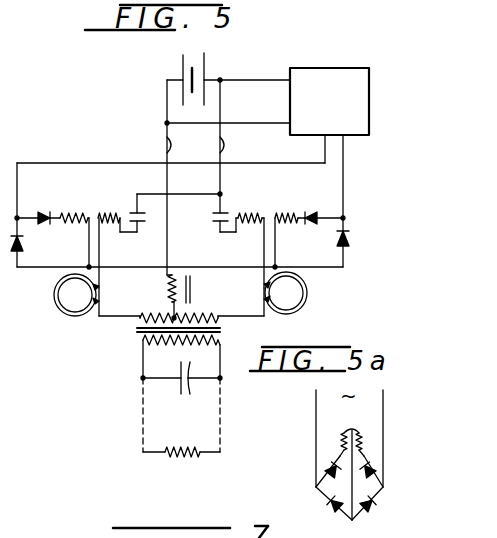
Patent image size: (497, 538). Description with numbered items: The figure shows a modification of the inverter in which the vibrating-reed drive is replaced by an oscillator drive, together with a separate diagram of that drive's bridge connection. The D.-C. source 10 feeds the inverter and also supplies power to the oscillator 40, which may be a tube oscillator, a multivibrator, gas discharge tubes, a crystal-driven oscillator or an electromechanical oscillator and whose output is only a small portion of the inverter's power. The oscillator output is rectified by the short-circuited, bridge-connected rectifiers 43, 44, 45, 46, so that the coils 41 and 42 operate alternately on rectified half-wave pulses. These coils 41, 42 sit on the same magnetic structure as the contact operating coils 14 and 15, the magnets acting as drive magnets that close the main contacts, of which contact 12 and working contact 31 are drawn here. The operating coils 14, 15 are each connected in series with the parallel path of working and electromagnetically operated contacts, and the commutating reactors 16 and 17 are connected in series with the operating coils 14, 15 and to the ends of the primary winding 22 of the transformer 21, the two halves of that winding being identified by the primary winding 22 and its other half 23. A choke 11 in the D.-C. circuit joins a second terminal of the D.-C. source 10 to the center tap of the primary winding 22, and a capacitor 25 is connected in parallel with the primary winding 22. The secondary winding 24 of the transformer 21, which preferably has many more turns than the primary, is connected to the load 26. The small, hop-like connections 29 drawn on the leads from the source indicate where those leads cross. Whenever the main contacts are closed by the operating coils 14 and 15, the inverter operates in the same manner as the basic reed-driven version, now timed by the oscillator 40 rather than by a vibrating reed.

In FIG. 5, the D.-C. source 10 is at (207, 66).
In FIG. 5, the oscillator 40 is at (370, 117).
In FIG. 5, the connections 29 is at (229, 151).
In FIG. 5, the rectifier 43 is at (41, 212).
In FIG. 5A, the rectifier 43 is at (332, 466).
In FIG. 5, the coil 41 is at (82, 211).
In FIG. 5A, the coil 41 is at (334, 440).
In FIG. 5, the operating coil 14 is at (114, 211).
In FIG. 5, the electromagnetically operated contact 12 is at (151, 214).
In FIG. 5, the working contact 31 is at (212, 217).
In FIG. 5, the operating coil 15 is at (261, 211).
In FIG. 5, the coil 42 is at (296, 211).
In FIG. 5A, the coil 42 is at (365, 439).
In FIG. 5, the rectifier 44 is at (329, 211).
In FIG. 5A, the rectifier 44 is at (376, 466).
In FIG. 5, the rectifier 46 is at (357, 243).
In FIG. 5A, the rectifier 46 is at (377, 511).
In FIG. 5, the rectifier 45 is at (33, 243).
In FIG. 5A, the rectifier 45 is at (338, 514).
In FIG. 5, the commutating reactor 16 is at (72, 317).
In FIG. 5, the commutating reactor 17 is at (309, 296).
In FIG. 5, the choke 11 is at (196, 289).
In FIG. 5, the transformer 21 is at (195, 321).
In FIG. 5, the primary winding half 23 is at (162, 306).
In FIG. 5, the primary winding 22 is at (200, 314).
In FIG. 5, the secondary winding 24 is at (162, 347).
In FIG. 5, the capacitor 25 is at (192, 370).
In FIG. 5, the load 26 is at (198, 442).